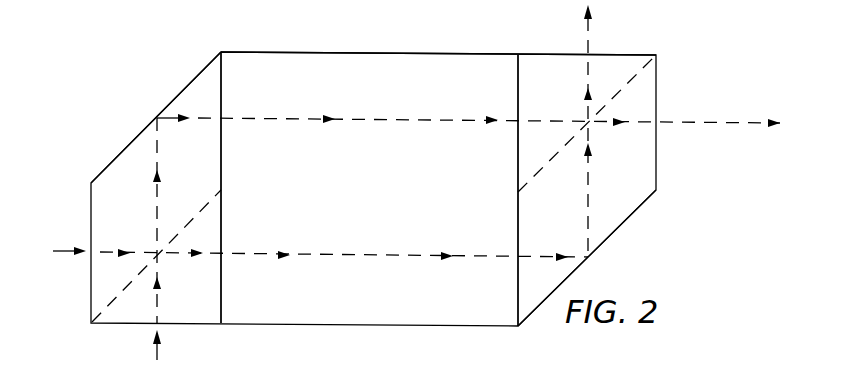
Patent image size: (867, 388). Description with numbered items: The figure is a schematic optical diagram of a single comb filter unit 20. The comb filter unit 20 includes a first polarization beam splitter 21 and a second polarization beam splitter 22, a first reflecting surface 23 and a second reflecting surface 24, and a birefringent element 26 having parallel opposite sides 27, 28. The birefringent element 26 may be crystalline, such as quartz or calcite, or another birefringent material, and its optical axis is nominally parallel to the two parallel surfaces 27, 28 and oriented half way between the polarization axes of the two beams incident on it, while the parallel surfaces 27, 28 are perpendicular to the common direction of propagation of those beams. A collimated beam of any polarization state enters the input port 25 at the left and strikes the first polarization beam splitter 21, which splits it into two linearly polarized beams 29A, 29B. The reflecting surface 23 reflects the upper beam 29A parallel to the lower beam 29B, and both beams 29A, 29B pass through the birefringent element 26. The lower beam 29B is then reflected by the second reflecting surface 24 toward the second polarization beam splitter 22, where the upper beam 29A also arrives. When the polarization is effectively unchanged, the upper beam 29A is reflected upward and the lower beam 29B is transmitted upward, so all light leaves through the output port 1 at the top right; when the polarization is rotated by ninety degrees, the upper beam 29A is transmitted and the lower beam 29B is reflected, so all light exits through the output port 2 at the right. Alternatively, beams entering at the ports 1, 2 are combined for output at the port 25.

The output port 1 is at (588, 44).
The output port 2 is at (677, 121).
The comb filter unit 20 is at (373, 172).
The first polarization beam splitter 21 is at (192, 218).
The second polarization beam splitter 22 is at (548, 165).
The first reflecting surface 23 is at (190, 80).
The second reflecting surface 24 is at (641, 206).
The input port 25 is at (65, 251).
The birefringent element 26 is at (450, 54).
The parallel surface 27 is at (223, 215).
The parallel surface 28 is at (517, 241).
The linearly polarized beam 29A is at (162, 172).
The linearly polarized beam 29B is at (288, 247).